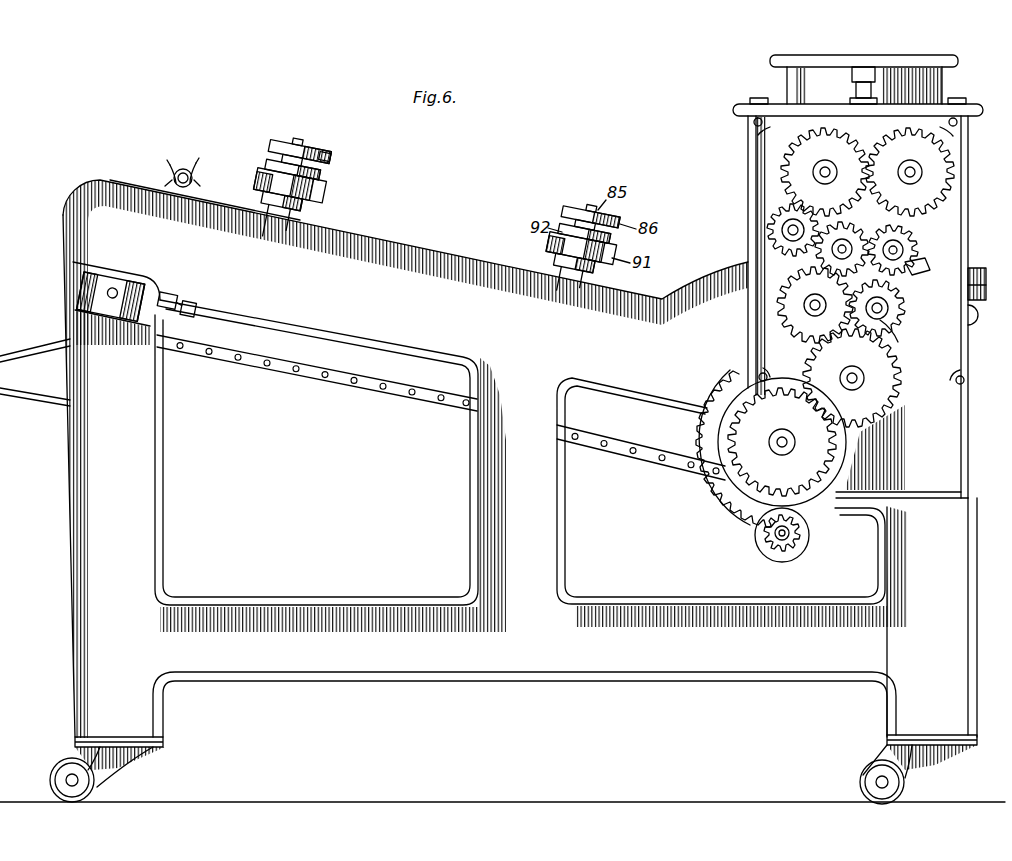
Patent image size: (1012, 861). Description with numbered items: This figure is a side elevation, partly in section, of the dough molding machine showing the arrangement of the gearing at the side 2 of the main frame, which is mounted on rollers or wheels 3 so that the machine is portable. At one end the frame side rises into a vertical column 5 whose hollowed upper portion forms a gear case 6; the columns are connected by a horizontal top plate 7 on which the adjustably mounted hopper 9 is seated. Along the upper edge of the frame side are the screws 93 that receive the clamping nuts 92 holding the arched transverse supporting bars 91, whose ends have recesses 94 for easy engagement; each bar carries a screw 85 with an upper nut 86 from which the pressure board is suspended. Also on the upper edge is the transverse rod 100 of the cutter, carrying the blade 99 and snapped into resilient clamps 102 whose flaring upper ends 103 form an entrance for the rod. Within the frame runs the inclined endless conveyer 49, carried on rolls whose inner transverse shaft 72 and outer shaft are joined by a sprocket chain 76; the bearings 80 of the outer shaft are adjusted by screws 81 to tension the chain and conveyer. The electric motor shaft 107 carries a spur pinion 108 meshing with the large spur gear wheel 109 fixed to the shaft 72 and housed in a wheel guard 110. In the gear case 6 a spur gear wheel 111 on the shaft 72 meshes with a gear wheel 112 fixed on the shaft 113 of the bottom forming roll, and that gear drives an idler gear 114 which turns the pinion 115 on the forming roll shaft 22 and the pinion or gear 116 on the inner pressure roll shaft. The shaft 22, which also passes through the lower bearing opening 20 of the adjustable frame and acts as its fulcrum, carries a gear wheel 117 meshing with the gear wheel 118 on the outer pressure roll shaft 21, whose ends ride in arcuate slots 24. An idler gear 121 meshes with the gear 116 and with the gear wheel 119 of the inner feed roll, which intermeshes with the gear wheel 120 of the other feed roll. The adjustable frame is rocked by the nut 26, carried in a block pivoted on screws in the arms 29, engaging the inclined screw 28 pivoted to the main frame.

The side of main frame 2 is at (488, 475).
The rollers or wheels 3 is at (872, 775).
The vertical column 5 is at (970, 436).
The gear case 6 is at (858, 307).
The top plate 7 is at (740, 106).
The hopper 9 is at (796, 80).
The lower bearing opening 20 is at (846, 245).
The shaft of outer pressure roll 21 is at (890, 244).
The shaft of forming roll 22 is at (900, 342).
The arcuate slot 24 is at (928, 265).
The nut 26 is at (980, 288).
The screw 28 is at (978, 268).
The outwardly projecting arm 29 is at (978, 320).
The traveling endless conveyer 49 is at (265, 375).
The inner transverse shaft 72 is at (780, 440).
The sprocket chain 76 is at (262, 348).
The bearing 80 is at (120, 292).
The screw 81 is at (188, 300).
The screw 85 is at (296, 146).
The upper nut 86 is at (322, 158).
The transverse supporting bar 91 is at (332, 198).
The clamping nut 92 is at (322, 178).
The screw 93 is at (282, 218).
The recess 94 is at (312, 215).
The cutter blade 99 is at (120, 182).
The transverse rod 100 is at (193, 180).
The clamp 102 is at (172, 168).
The upper ends of jaws 103 is at (176, 162).
The motor shaft 107 is at (778, 556).
The spur pinion 108 is at (762, 548).
The spur gear wheel 109 is at (748, 500).
The wheel guard 110 is at (722, 470).
The spur gear wheel 111 is at (782, 442).
The gear wheel 112 is at (852, 378).
The shaft of bottom forming roll 113 is at (840, 379).
The idler gear 114 is at (784, 302).
The pinion 115 is at (818, 312).
The pinion or gear 116 is at (858, 302).
The gear wheel 117 is at (892, 310).
The gear wheel 118 is at (905, 242).
The gear wheel 119 is at (825, 172).
The gear wheel 120 is at (910, 172).
The idler gear 121 is at (770, 230).